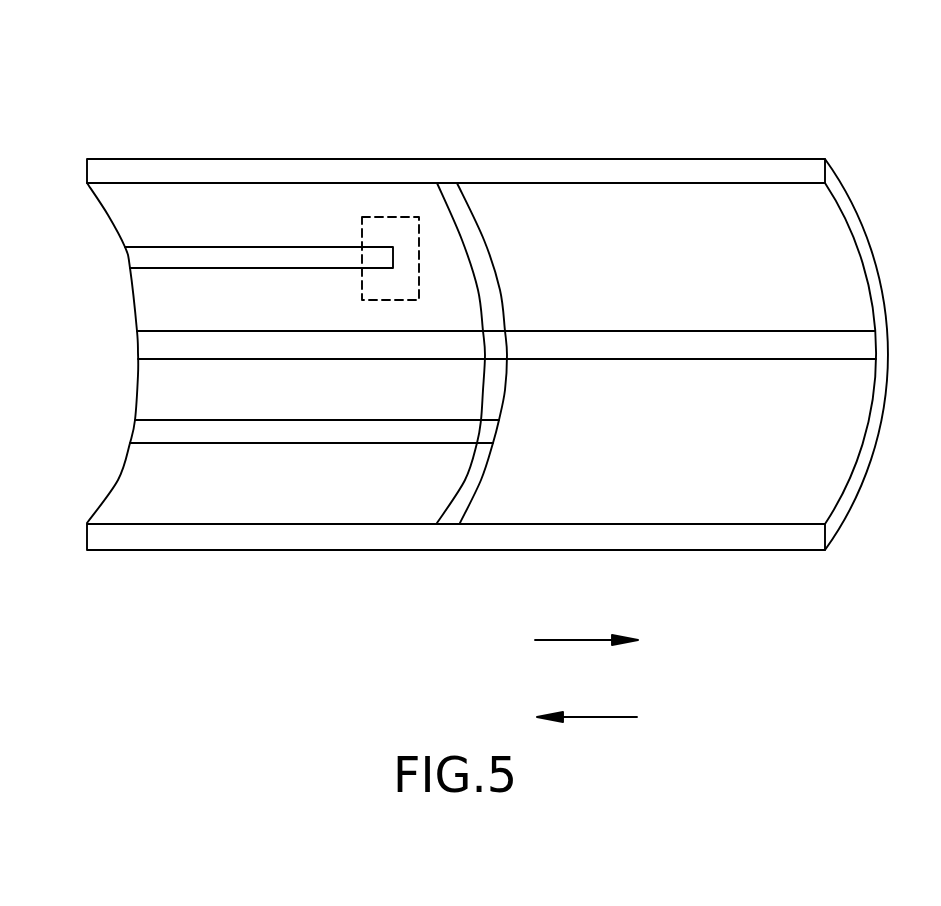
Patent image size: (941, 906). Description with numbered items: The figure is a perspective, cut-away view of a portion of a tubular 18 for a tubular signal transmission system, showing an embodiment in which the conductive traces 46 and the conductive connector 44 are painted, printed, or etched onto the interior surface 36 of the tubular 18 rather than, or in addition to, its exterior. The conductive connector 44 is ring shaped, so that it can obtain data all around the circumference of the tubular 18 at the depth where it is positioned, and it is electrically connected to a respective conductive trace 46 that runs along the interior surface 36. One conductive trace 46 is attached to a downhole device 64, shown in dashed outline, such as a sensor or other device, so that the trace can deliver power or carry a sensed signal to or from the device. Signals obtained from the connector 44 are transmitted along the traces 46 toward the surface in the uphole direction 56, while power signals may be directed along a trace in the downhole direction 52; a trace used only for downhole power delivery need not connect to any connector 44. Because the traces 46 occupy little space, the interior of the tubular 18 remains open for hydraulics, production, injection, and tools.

The tubular 18 is at (544, 165).
The interior surface 36 is at (677, 483).
The conductive connector 44 is at (452, 512).
The conductive trace 46 is at (210, 247).
The downhole direction 52 is at (586, 625).
The uphole direction 56 is at (587, 702).
The downhole device 64 is at (383, 217).